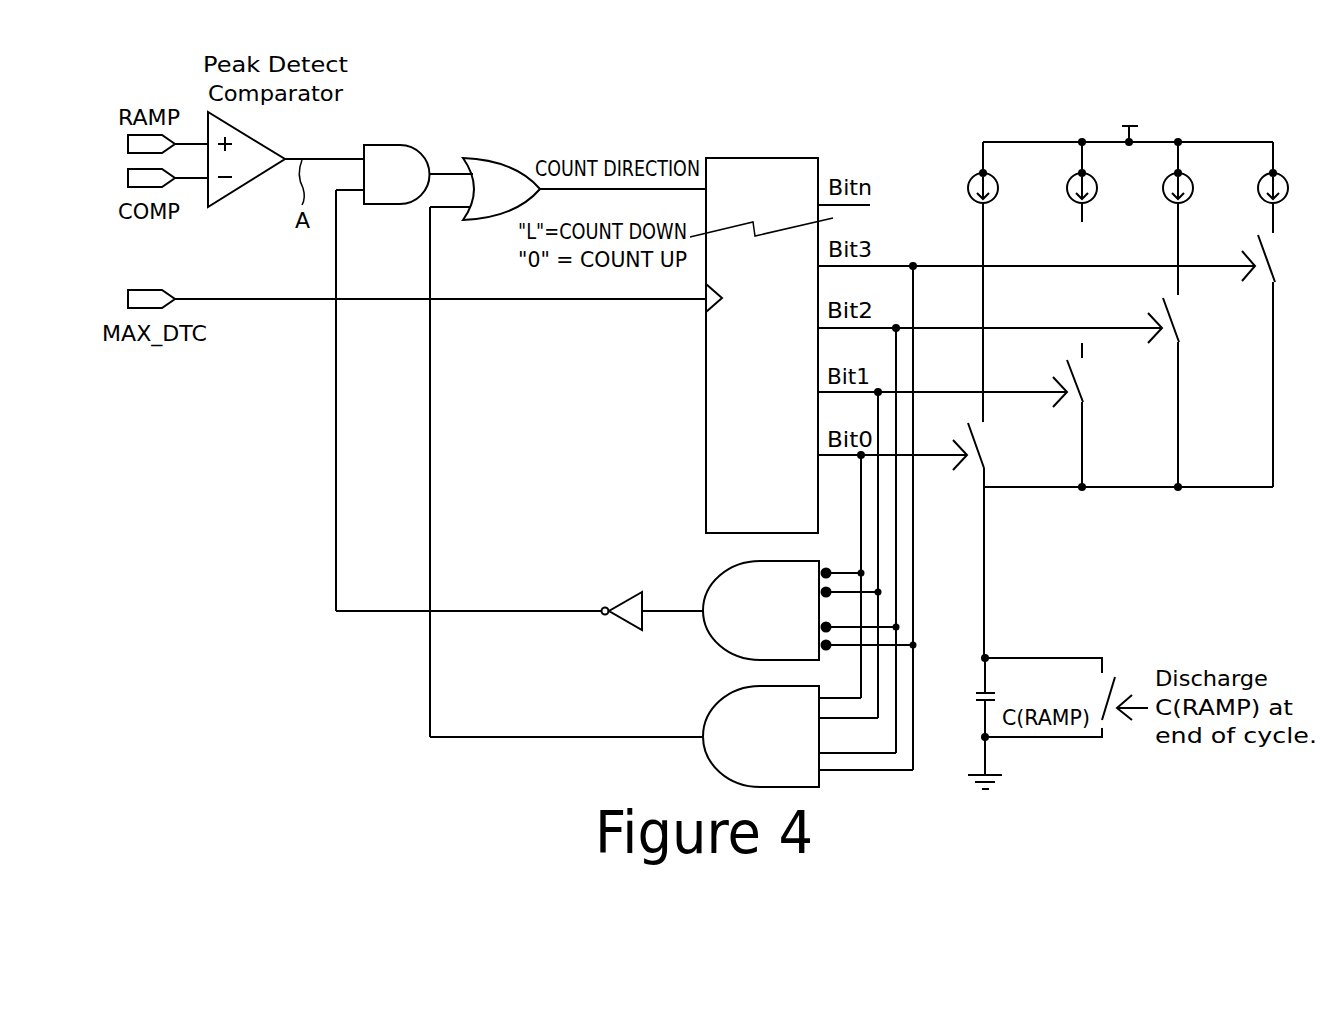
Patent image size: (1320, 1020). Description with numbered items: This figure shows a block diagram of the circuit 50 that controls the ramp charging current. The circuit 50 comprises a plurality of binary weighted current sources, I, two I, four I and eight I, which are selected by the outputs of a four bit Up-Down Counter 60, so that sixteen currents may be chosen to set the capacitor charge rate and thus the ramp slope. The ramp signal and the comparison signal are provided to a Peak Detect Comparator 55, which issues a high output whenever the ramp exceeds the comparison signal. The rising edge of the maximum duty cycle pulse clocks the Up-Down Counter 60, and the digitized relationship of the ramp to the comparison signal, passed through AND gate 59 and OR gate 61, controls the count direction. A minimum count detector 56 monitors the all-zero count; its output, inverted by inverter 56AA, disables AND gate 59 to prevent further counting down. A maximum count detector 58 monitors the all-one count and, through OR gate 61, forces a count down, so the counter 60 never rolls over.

The circuit 50 is at (1113, 73).
The Peak Detect Comparator 55 is at (248, 146).
The minimum count detector 56 is at (725, 637).
The inverter 56AA is at (628, 597).
The maximum count detector 58 is at (725, 757).
The AND gate 59 is at (393, 157).
The Up-Down Counter 60 is at (725, 420).
The OR gate 61 is at (500, 177).